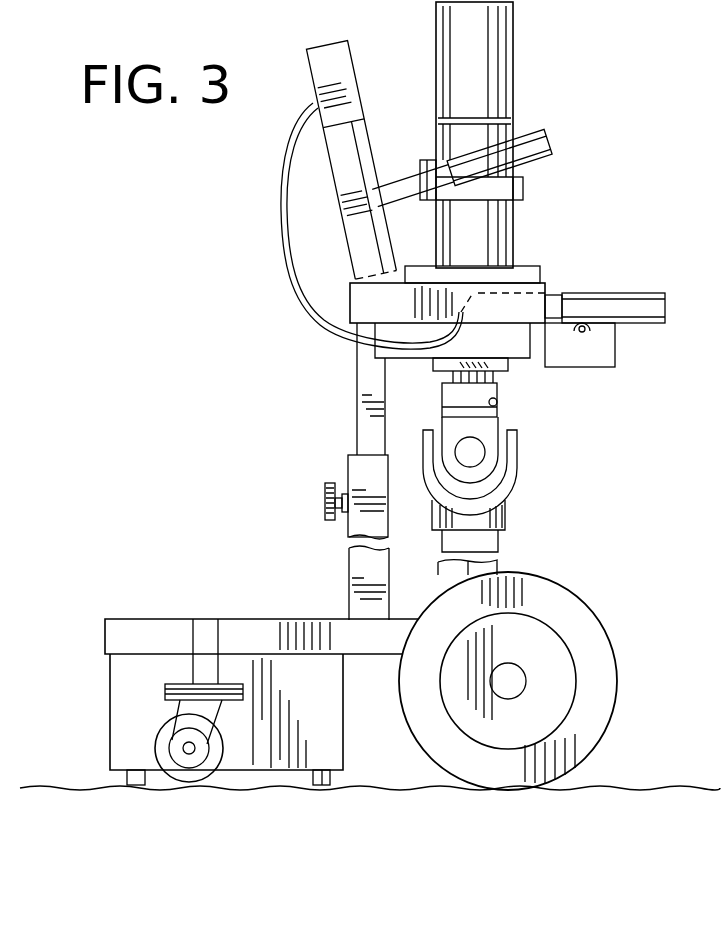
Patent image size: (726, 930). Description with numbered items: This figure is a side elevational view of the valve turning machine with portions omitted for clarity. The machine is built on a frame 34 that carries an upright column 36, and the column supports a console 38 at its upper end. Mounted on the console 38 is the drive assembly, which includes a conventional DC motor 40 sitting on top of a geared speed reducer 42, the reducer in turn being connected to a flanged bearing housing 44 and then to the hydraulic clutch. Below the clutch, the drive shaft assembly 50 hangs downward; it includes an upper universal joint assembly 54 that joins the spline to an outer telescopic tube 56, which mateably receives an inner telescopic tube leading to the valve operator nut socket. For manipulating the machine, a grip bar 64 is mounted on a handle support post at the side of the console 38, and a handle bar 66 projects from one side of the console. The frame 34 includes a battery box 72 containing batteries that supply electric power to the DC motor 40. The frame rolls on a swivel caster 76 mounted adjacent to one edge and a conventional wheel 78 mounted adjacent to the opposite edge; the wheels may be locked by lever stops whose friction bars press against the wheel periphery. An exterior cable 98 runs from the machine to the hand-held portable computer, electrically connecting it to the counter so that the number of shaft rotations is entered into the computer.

The frame 34 is at (238, 676).
The upright column 36 is at (345, 440).
The console 38 is at (550, 268).
The DC motor 40 is at (520, 65).
The geared speed reducer 42 is at (530, 125).
The flanged bearing housing 44 is at (502, 276).
The drive shaft assembly 50 is at (528, 457).
The upper universal joint assembly 54 is at (498, 416).
The outer telescopic tube 56 is at (492, 536).
The grip bar 64 is at (525, 153).
The handle bar 66 is at (637, 313).
The battery box 72 is at (118, 642).
The swivel caster 76 is at (163, 743).
The wheel 78 is at (568, 615).
The exterior cable 98 is at (318, 333).